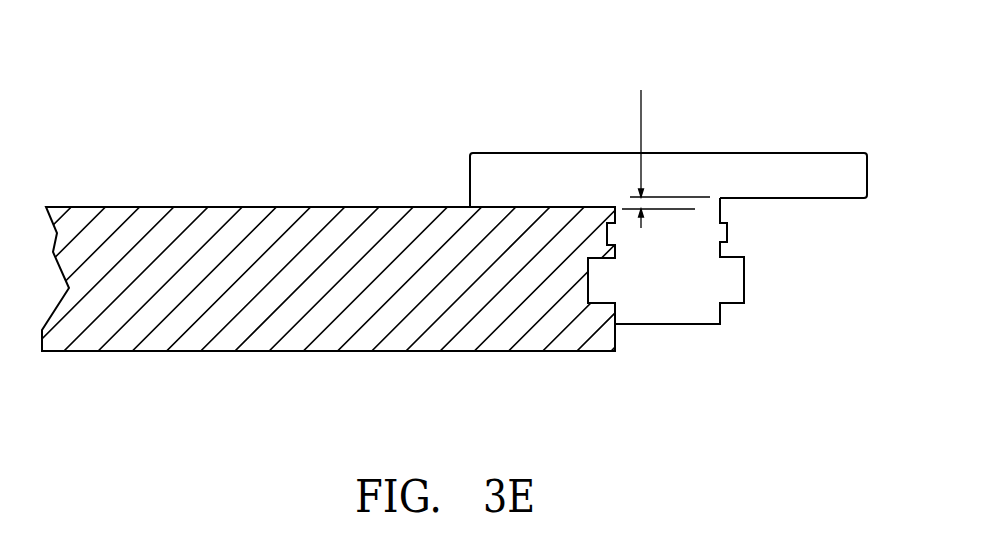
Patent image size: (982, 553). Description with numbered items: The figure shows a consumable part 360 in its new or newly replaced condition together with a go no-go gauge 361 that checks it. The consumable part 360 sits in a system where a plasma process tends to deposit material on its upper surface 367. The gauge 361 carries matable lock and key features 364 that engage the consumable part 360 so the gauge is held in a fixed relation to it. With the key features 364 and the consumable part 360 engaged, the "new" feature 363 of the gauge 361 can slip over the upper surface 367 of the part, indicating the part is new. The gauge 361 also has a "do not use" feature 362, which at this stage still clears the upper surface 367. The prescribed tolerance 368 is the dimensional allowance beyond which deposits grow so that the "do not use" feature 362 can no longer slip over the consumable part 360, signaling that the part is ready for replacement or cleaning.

The consumable part 360 is at (183, 232).
The go no-go gauge 361 is at (660, 233).
The "do not use" feature 362 is at (806, 192).
The "new" feature 363 is at (490, 160).
The key features 364 is at (608, 289).
The upper surface 367 is at (257, 209).
The prescribed tolerance 368 is at (666, 148).